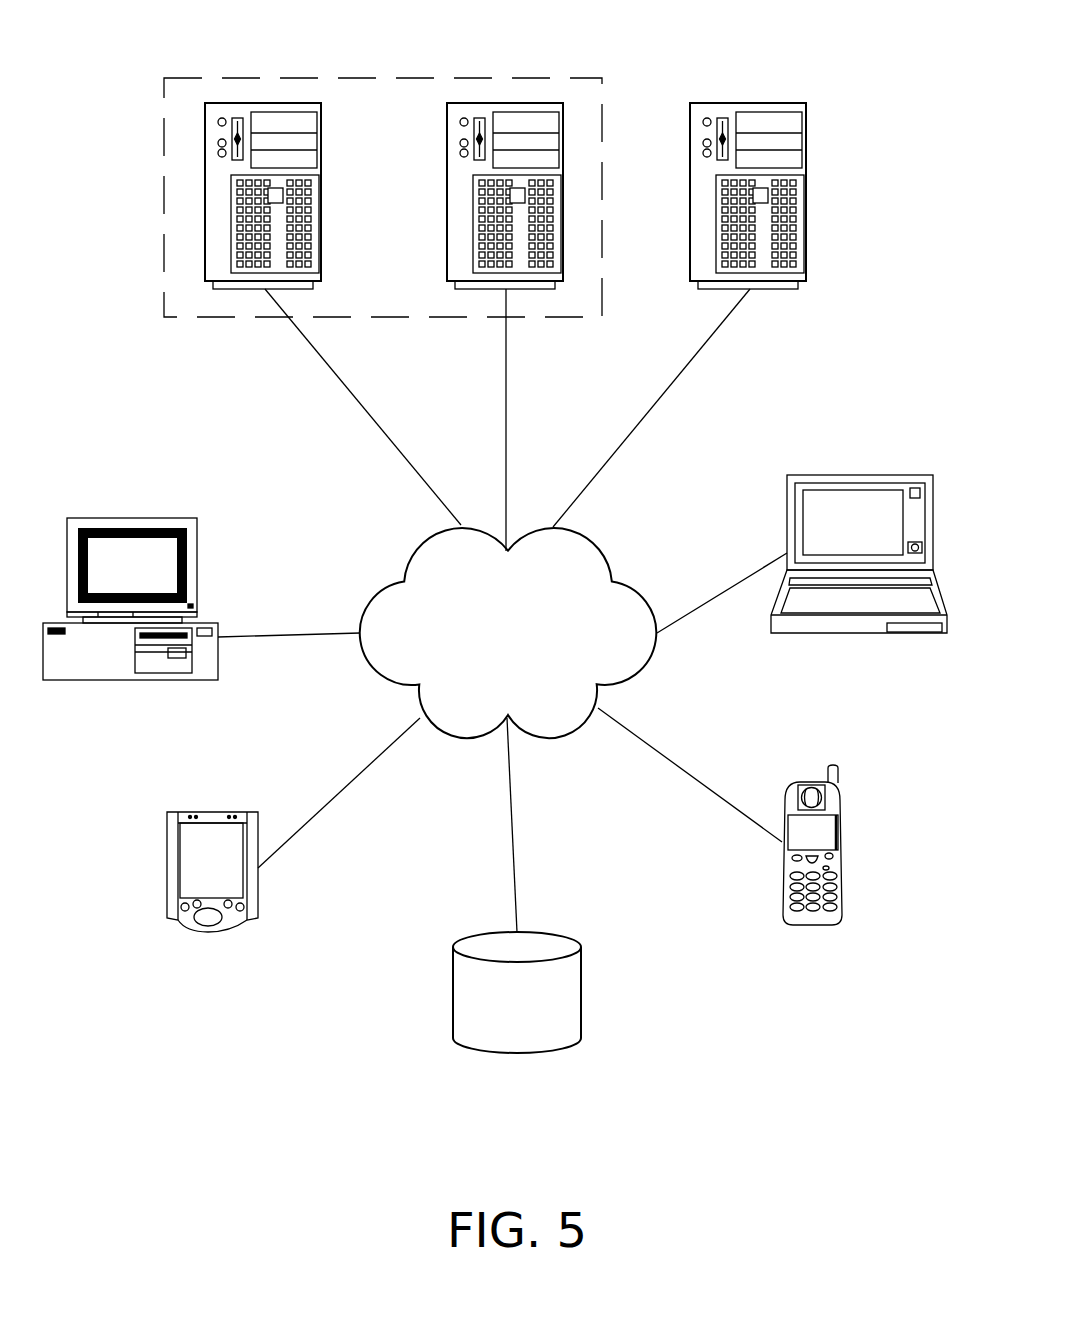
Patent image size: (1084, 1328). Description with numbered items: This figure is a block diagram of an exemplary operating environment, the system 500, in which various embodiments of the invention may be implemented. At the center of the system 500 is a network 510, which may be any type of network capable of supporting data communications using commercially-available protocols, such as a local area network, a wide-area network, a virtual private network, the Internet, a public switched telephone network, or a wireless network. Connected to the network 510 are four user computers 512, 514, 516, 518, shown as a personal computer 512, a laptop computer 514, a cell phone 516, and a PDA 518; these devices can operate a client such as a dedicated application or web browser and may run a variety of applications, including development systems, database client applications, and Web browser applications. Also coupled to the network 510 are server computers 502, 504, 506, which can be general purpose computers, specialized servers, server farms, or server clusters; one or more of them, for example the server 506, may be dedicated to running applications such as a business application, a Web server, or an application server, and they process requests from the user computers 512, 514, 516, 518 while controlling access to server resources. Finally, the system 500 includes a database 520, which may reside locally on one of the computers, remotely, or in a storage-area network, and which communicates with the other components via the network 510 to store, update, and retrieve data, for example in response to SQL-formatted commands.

The system 500 is at (916, 107).
The server computer 502 is at (243, 103).
The server computer 504 is at (503, 103).
The server computer 506 is at (808, 193).
The network 510 is at (528, 681).
The user computer 512 is at (128, 518).
The user computer 514 is at (855, 475).
The user computer 516 is at (808, 925).
The user computer 518 is at (208, 932).
The database 520 is at (540, 1041).